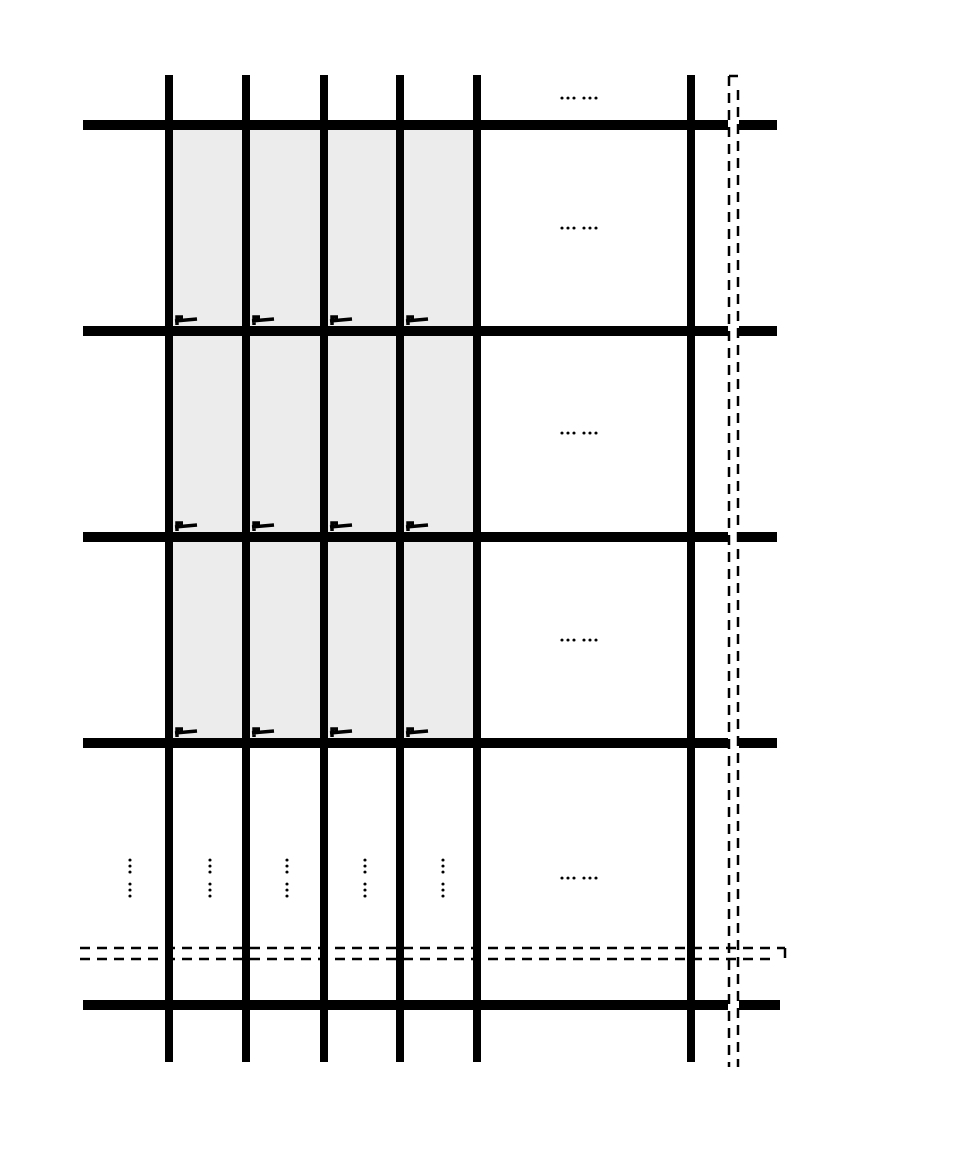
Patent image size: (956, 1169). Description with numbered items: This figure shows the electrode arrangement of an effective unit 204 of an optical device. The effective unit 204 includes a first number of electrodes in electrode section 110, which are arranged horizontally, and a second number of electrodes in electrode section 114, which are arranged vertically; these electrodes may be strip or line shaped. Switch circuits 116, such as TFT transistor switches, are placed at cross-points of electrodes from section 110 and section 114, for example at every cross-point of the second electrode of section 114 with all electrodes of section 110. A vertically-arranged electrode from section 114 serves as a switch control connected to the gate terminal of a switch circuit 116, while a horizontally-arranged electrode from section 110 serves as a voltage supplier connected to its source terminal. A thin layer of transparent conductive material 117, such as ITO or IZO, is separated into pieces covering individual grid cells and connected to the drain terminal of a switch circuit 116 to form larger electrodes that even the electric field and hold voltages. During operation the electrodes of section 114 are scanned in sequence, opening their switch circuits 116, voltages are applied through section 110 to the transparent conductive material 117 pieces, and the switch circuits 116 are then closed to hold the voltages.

The effective unit 204 is at (656, 25).
The electrode section 110 is at (165, 88).
The electrode section 114 is at (145, 533).
The switch circuit 116 is at (180, 318).
The transparent conductive material 117 is at (183, 210).